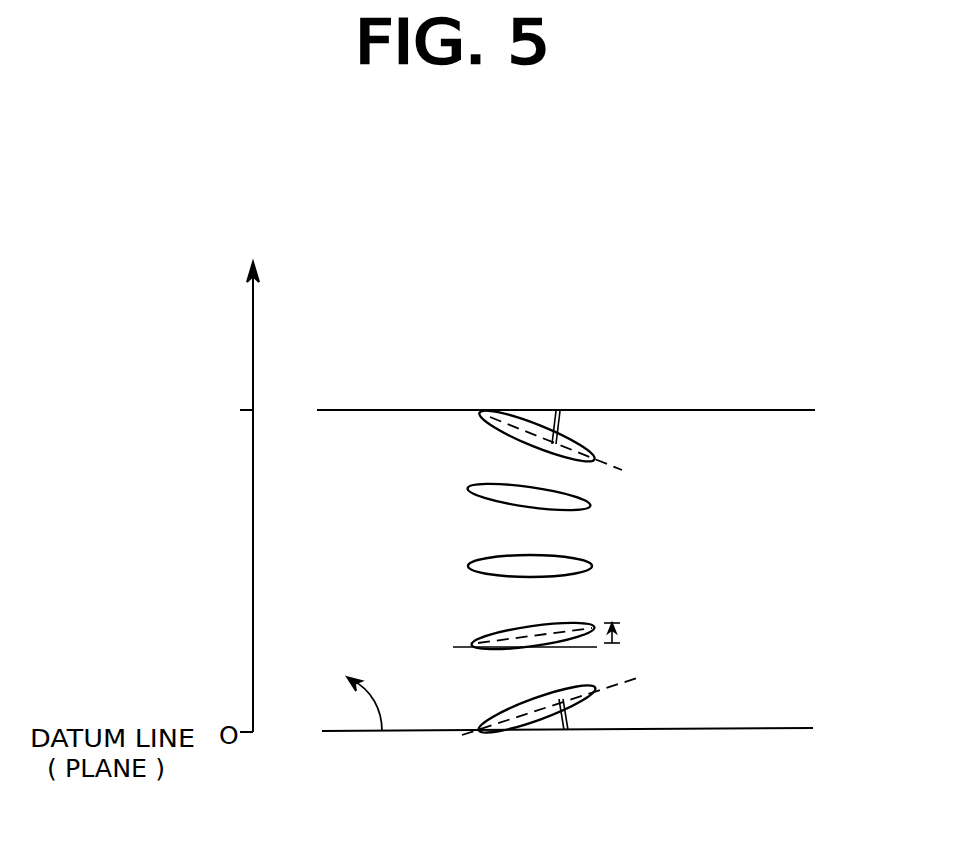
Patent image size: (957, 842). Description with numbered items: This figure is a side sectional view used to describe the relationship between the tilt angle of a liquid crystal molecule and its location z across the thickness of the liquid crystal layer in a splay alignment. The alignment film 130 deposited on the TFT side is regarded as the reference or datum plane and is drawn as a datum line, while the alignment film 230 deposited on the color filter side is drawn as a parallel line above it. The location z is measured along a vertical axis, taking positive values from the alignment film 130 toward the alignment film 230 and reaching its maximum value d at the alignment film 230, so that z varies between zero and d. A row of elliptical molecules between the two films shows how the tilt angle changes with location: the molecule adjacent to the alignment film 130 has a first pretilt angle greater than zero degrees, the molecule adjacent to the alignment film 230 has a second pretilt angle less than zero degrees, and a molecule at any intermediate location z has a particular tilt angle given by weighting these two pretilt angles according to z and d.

The alignment film 130 is at (778, 728).
The alignment film 230 is at (762, 410).
The location z is at (155, 496).
The maximum value d is at (237, 411).